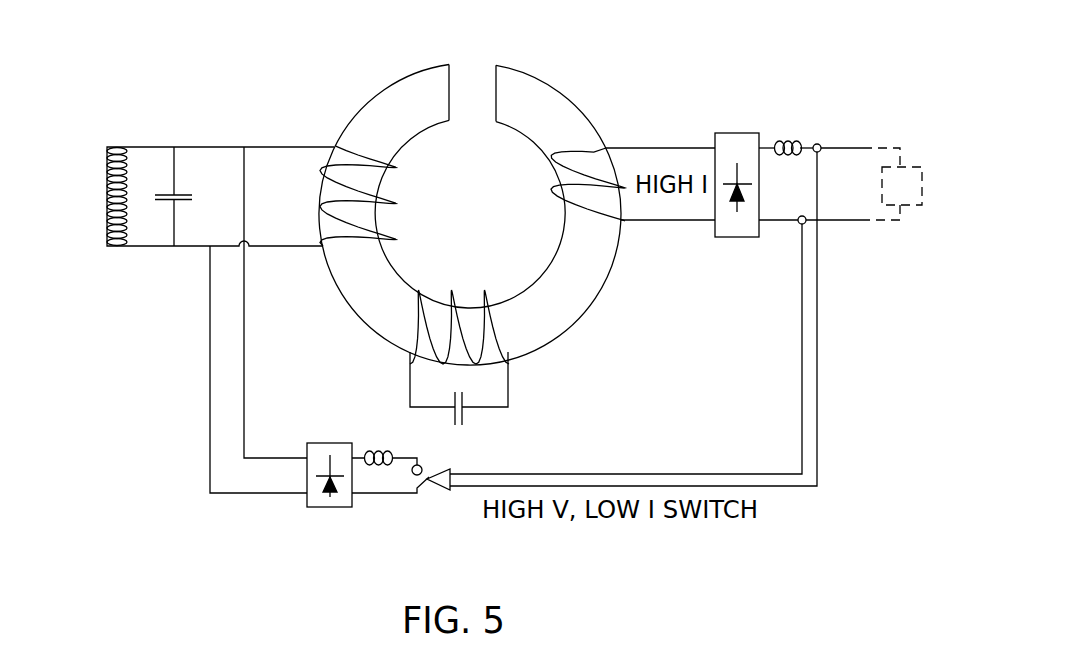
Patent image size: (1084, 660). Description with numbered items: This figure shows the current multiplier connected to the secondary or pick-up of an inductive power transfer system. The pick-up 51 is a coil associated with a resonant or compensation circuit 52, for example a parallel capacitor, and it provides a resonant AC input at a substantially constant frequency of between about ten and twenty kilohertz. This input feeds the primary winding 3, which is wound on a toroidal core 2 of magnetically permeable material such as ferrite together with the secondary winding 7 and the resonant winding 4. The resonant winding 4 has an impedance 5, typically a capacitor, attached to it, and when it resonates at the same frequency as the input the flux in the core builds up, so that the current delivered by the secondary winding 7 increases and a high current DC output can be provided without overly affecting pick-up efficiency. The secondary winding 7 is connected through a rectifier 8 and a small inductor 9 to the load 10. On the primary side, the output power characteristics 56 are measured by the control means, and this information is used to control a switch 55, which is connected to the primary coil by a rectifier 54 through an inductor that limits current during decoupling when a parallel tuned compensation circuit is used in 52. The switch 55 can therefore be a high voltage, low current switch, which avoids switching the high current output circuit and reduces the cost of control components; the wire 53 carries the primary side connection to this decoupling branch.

The toroidal core 2 is at (528, 98).
The primary winding 3 is at (360, 186).
The resonant winding 4 is at (466, 330).
The impedance 5 is at (477, 418).
The secondary winding 7 is at (577, 152).
The diode rectifier 8 is at (735, 147).
The inductor 9 is at (801, 146).
The load 10 is at (901, 185).
The pick-up 51 is at (97, 181).
The compensation circuit 52 is at (184, 183).
The wire 53 is at (225, 352).
The rectifier 54 is at (318, 500).
The switch 55 is at (413, 480).
The output power characteristics 56 is at (820, 225).